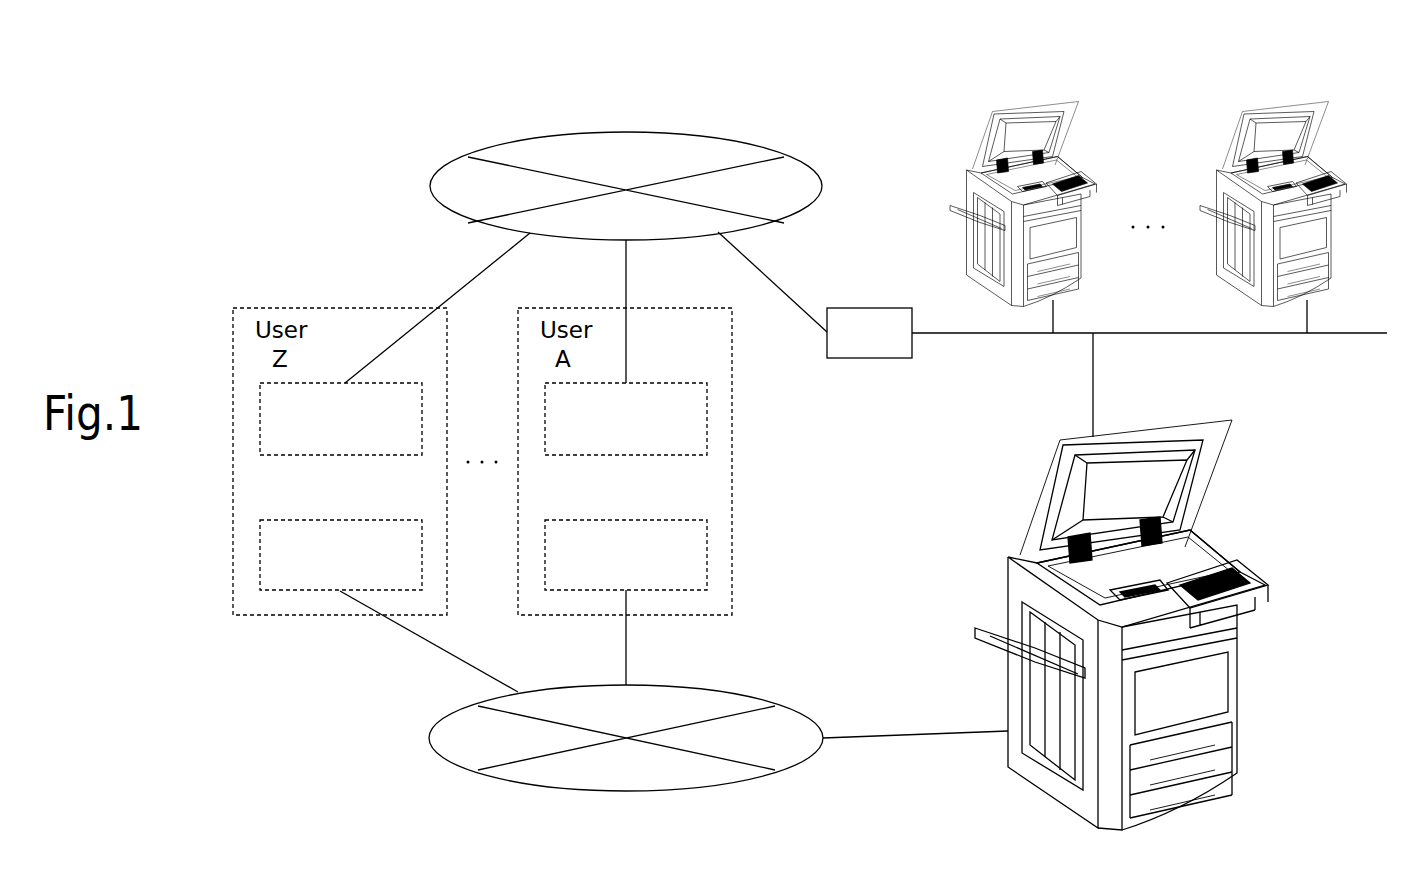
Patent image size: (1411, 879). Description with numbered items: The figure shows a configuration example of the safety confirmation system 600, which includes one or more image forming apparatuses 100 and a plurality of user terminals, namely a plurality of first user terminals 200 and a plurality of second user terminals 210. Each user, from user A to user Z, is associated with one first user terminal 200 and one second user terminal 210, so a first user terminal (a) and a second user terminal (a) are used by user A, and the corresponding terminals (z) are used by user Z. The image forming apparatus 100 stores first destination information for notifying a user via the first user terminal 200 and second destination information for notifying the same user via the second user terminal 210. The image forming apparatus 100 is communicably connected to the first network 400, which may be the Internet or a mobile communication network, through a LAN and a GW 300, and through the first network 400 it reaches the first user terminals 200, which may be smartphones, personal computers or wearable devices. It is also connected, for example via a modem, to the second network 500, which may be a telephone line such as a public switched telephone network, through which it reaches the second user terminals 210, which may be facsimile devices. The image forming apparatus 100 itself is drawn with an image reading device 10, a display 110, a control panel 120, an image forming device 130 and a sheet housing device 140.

The image reading device 10 is at (1212, 415).
The image forming apparatus 100 is at (1171, 466).
The display 110 is at (1213, 577).
The control panel 120 is at (1262, 579).
The image forming device 130 is at (1208, 677).
The sheet housing device 140 is at (1237, 713).
The first user terminal 200 is at (372, 383).
The second user terminal 210 is at (355, 519).
The GW (Gateway) 300 is at (869, 308).
The first network 400 is at (626, 132).
The second network 500 is at (782, 703).
The safety confirmation system 600 is at (818, 97).